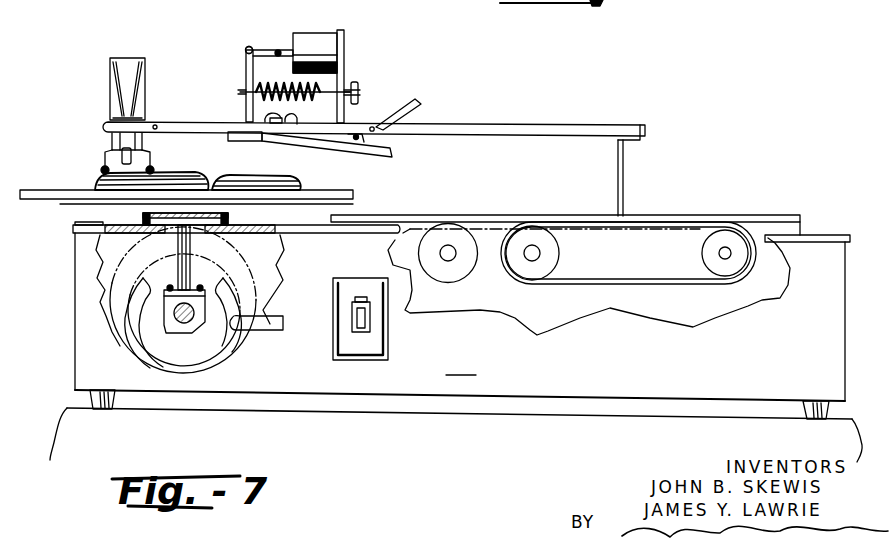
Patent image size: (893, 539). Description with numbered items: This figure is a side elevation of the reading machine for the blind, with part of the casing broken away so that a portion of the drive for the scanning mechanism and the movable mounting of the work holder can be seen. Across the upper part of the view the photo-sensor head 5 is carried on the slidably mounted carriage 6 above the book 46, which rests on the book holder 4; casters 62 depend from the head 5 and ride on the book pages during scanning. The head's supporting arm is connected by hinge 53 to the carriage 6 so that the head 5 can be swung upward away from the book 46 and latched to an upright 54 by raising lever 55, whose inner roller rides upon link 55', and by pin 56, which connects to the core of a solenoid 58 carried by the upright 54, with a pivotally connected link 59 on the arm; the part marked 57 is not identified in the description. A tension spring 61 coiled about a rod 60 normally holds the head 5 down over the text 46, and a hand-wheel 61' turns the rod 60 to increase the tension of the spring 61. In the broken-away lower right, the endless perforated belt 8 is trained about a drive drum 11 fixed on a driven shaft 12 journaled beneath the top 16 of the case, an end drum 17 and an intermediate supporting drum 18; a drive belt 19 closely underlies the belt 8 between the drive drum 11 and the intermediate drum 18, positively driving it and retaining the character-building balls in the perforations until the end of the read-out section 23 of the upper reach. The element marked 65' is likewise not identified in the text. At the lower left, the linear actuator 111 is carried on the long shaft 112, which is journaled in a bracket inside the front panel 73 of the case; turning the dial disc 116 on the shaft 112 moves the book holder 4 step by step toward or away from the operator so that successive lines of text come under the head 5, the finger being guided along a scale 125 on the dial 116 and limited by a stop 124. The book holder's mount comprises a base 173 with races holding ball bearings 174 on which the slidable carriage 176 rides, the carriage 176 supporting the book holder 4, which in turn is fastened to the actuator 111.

The book holder 4 is at (42, 189).
The photo-sensor head 5 is at (106, 68).
The carriage 6 is at (533, 123).
The endless perforated belt 8 is at (484, 216).
The drive drum 11 is at (706, 247).
The driven shaft 12 is at (720, 258).
The top of the case 16 is at (822, 232).
The end drum 17 is at (466, 258).
The intermediate supporting drum 18 is at (552, 253).
The drive belt 19 is at (622, 280).
The read-out section 23 is at (656, 223).
The book 46 is at (184, 173).
The hinge 53 is at (272, 130).
The upright 54 is at (345, 47).
The raising lever 55 is at (413, 102).
The link 55' is at (310, 152).
The pin 56 is at (246, 50).
The link 57 is at (268, 50).
The solenoid 58 is at (312, 38).
The link 59 is at (245, 103).
The rod 60 is at (350, 88).
The tension spring 61 is at (278, 78).
The hand-wheel 61' is at (371, 78).
The casters 62 is at (101, 166).
The switch 65' is at (377, 319).
The front panel of the case 73 is at (461, 366).
The linear actuator 111 is at (168, 345).
The actuator shaft 112 is at (165, 318).
The dial disc 116 is at (152, 348).
The stop 124 is at (266, 330).
The scale 125 is at (232, 367).
The base 173 is at (73, 229).
The ball bearings 174 is at (218, 214).
The slidable carriage 176 is at (98, 207).